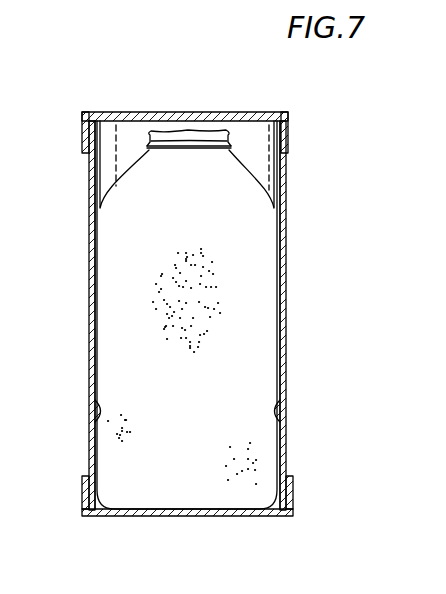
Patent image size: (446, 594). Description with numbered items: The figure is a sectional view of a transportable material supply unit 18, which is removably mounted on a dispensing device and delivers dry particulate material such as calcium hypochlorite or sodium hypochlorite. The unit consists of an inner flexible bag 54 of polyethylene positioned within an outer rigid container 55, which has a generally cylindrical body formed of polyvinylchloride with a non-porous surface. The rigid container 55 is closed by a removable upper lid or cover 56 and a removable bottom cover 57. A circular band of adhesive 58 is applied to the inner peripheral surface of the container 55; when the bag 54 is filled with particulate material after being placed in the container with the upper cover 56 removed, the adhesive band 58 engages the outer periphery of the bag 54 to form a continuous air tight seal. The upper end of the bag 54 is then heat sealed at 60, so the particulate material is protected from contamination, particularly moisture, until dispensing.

The material supply unit 18 is at (287, 216).
The flexible bag 54 is at (250, 292).
The rigid container 55 is at (285, 345).
The upper cover 56 is at (240, 113).
The bottom cover 57 is at (230, 517).
The circular band of adhesive 58 is at (278, 412).
The heat seal 60 is at (186, 146).